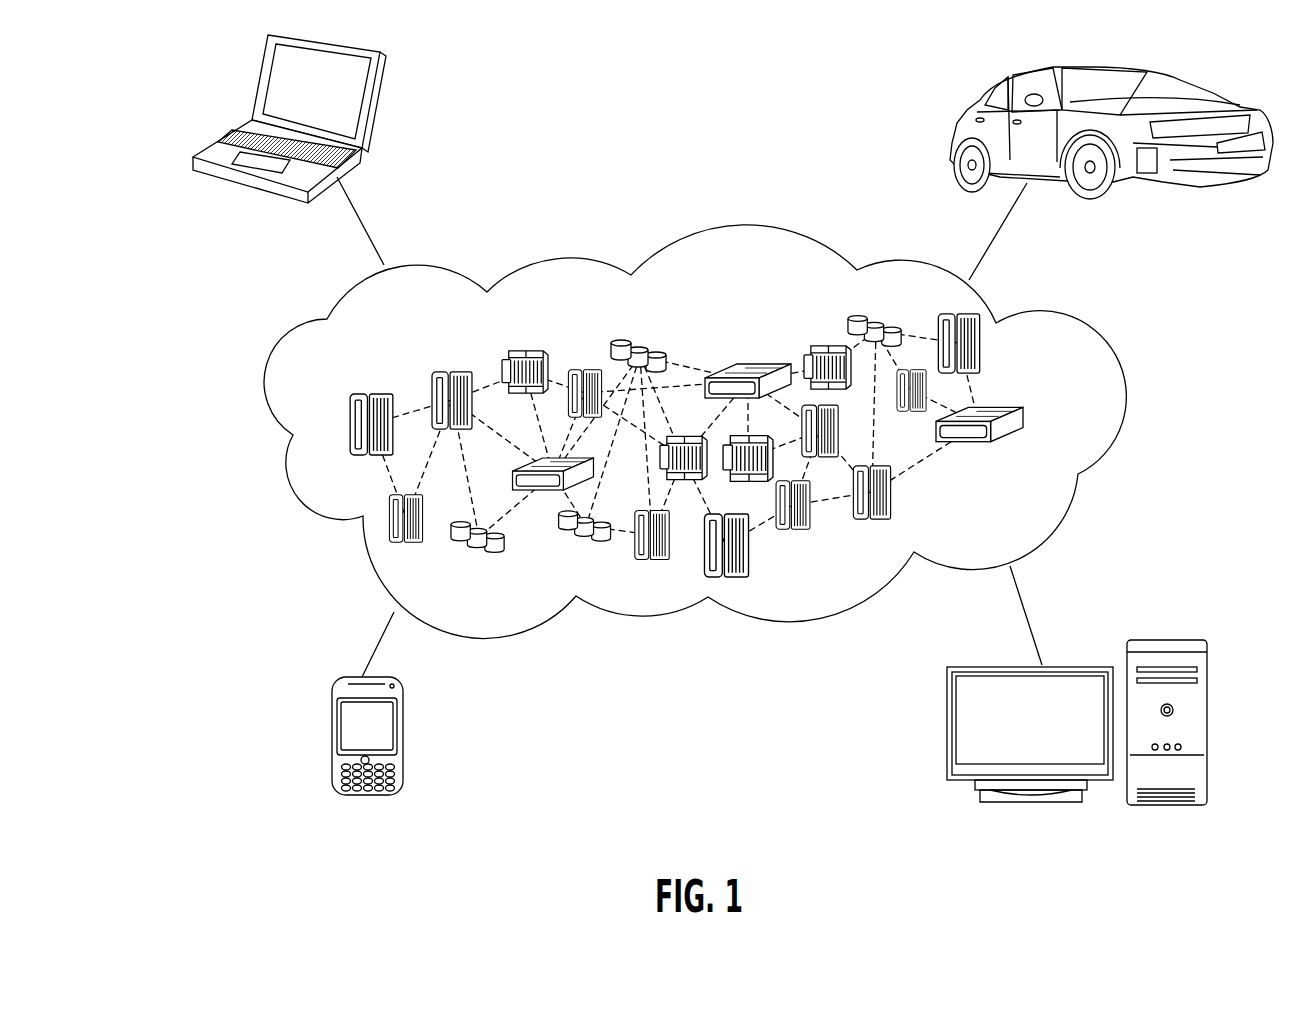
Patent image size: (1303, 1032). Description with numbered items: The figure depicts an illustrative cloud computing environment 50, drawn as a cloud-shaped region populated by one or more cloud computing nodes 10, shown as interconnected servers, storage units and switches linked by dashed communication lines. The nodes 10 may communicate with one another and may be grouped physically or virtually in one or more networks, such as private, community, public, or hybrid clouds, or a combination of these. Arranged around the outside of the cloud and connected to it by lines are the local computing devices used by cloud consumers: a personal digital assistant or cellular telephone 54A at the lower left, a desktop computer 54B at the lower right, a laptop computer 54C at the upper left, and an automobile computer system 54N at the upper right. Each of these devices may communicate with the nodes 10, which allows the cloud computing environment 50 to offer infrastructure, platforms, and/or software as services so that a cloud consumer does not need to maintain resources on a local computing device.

The cloud computing nodes 10 is at (1062, 426).
The cloud computing environment 50 is at (1090, 340).
The personal digital assistant or cellular telephone 54A is at (333, 742).
The desktop computer 54B is at (1170, 640).
The laptop computer 54C is at (370, 107).
The automobile computer system 54N is at (960, 117).